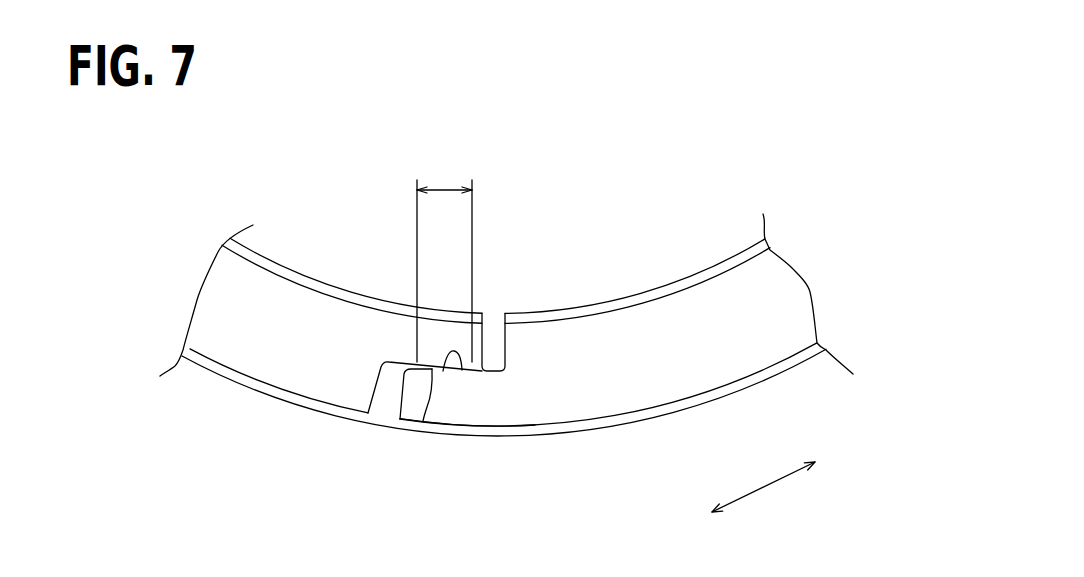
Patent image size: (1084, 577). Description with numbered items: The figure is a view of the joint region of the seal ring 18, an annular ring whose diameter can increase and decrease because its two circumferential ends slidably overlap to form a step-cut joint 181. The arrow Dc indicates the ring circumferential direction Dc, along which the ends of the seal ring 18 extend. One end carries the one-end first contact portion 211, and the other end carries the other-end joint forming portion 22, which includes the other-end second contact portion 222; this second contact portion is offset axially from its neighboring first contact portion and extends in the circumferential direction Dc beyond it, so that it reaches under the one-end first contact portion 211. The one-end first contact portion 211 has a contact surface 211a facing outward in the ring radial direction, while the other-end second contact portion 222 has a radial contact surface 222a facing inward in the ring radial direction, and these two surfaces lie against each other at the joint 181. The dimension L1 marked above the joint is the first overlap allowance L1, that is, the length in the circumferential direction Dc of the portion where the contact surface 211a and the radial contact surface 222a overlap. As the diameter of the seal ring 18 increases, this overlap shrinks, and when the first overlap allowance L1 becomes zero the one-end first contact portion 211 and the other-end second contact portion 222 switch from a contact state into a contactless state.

The seal ring 18 is at (638, 485).
The joint 181 is at (574, 443).
The one-end first contact portion 211 is at (448, 333).
The contact surface 211a is at (423, 420).
The other-end joint forming portion 22 is at (478, 437).
The other-end second contact portion 222 is at (440, 407).
The radial contact surface 222a is at (462, 370).
The first overlap allowance L1 is at (447, 188).
The ring circumferential direction Dc is at (765, 493).